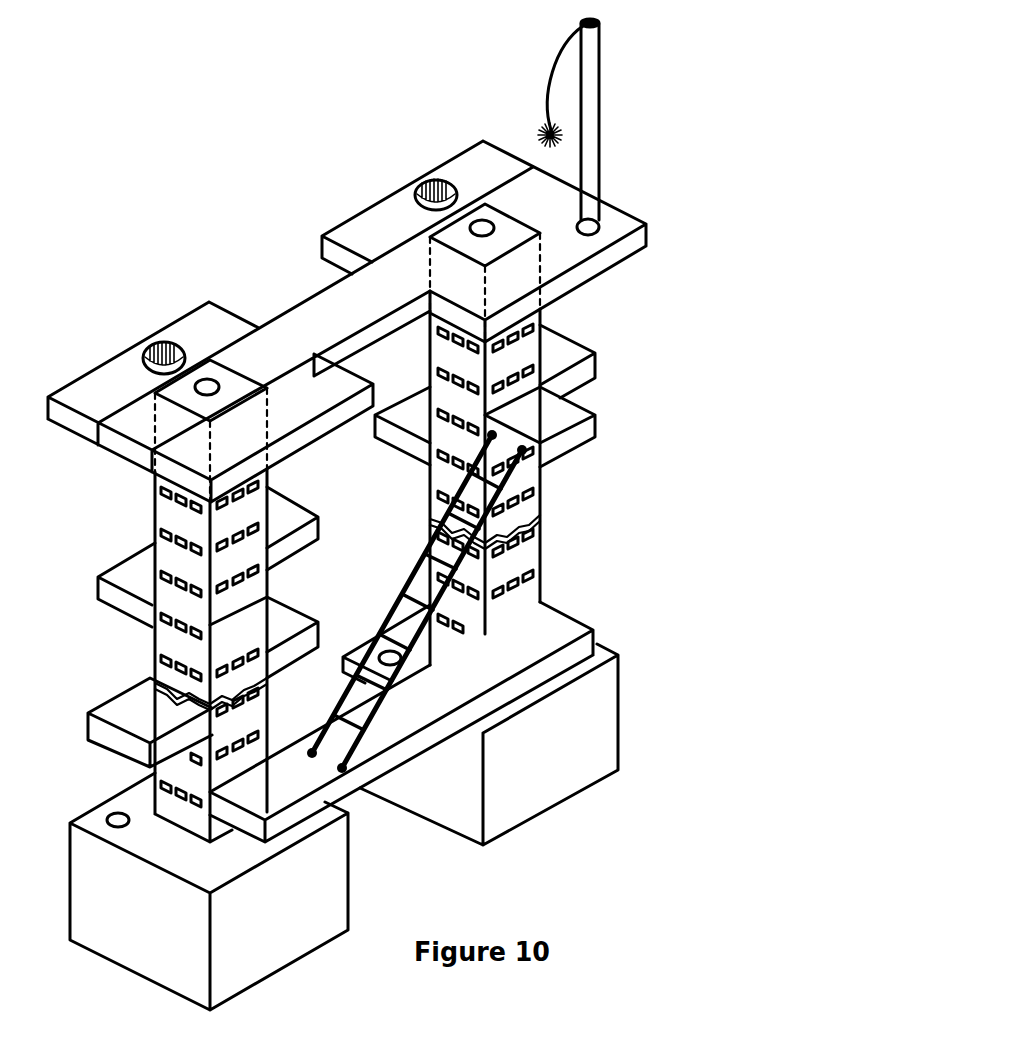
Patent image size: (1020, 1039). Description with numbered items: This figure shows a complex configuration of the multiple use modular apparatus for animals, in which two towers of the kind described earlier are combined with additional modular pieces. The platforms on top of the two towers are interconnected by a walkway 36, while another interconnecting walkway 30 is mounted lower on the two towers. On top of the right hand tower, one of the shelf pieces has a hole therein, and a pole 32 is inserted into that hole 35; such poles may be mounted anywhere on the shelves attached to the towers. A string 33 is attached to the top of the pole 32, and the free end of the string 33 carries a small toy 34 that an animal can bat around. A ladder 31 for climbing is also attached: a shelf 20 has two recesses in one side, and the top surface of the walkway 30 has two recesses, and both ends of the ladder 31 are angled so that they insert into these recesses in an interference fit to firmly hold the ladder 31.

The shelf 20 is at (596, 426).
The interconnecting walkway 30 is at (562, 628).
The ladder 31 is at (384, 605).
The pole 32 is at (602, 101).
The string 33 is at (551, 66).
The small toy 34 is at (538, 127).
The hole 35 is at (604, 221).
The walkway 36 is at (318, 291).